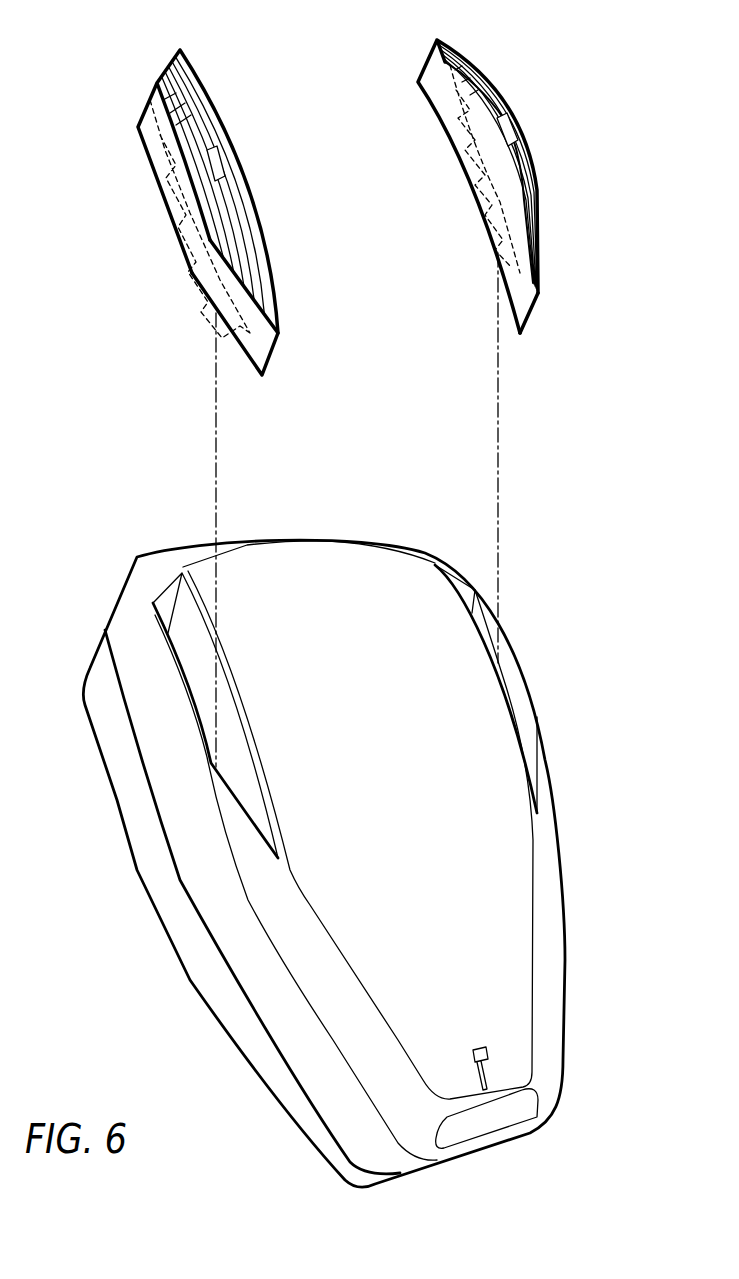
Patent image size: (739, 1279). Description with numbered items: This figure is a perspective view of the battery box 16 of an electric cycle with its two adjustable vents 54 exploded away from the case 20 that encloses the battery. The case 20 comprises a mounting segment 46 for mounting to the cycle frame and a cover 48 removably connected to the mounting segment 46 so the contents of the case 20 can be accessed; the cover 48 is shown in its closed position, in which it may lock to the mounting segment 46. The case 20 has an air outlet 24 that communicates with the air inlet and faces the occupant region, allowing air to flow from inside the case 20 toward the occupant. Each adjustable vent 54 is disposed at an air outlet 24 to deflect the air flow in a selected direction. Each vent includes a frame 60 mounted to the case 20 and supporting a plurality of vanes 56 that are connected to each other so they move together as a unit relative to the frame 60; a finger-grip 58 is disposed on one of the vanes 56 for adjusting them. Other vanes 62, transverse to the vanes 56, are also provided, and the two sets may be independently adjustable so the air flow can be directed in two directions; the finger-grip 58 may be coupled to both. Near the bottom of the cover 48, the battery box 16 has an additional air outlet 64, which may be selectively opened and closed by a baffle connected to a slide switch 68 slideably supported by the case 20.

The battery box 16 is at (593, 560).
The case 20 is at (327, 563).
The air outlet 24 is at (195, 663).
The mounting segment 46 is at (200, 974).
The cover 48 is at (507, 980).
The adjustable vent 54 is at (143, 66).
The vanes 56 is at (250, 260).
The finger-grip 58 is at (218, 150).
The frame 60 is at (277, 310).
The vanes 62 is at (187, 233).
The additional air outlet 64 is at (517, 1108).
The slide switch 68 is at (488, 1052).